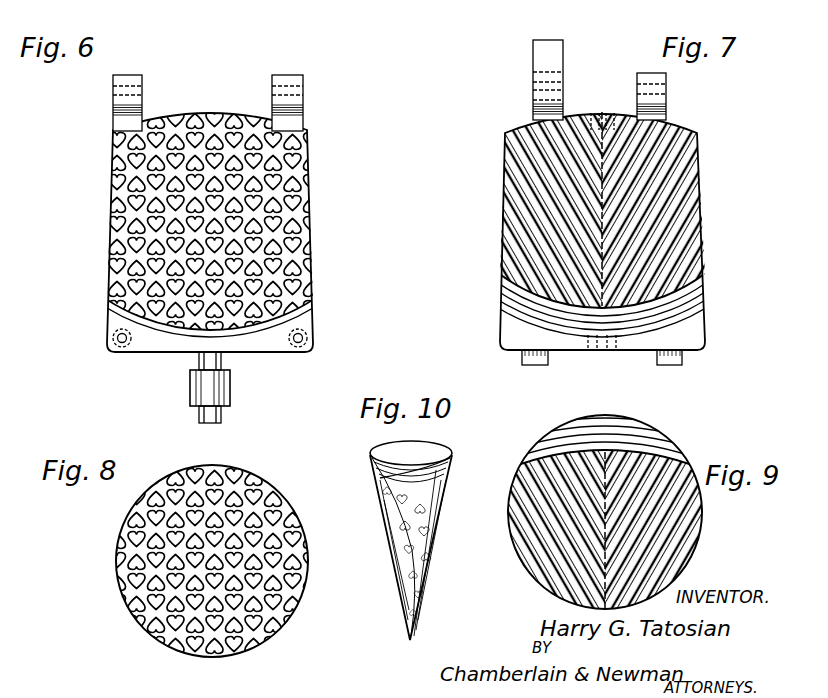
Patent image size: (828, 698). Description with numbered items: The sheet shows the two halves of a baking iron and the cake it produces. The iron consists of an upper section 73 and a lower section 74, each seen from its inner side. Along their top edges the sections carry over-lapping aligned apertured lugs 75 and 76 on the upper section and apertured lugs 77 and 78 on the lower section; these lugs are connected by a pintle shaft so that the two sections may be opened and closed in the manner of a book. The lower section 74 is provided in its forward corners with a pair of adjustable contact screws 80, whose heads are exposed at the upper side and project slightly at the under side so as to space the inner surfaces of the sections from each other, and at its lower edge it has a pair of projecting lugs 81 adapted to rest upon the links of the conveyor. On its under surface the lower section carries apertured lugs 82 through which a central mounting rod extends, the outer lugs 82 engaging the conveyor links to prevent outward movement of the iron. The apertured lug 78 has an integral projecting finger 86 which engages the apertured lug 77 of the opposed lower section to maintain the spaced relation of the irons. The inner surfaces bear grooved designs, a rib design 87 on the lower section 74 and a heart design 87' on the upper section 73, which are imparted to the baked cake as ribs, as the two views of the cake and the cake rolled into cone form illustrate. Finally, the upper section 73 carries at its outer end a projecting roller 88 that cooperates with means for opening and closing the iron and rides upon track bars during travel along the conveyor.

In FIG. 6, the upper section 73 is at (313, 178).
In FIG. 7, the lower section 74 is at (500, 238).
In FIG. 6, the apertured lug 75 is at (142, 90).
In FIG. 6, the apertured lug 76 is at (303, 90).
In FIG. 7, the apertured lug 77 is at (660, 90).
In FIG. 7, the apertured lug 78 is at (541, 92).
In FIG. 6, the adjustable contact screws 80 is at (120, 346).
In FIG. 7, the projecting lugs 81 is at (537, 366).
In FIG. 7, the apertured lugs 82 is at (603, 110).
In FIG. 7, the projecting finger 86 is at (555, 53).
In FIG. 7, the grooved design 87 is at (617, 205).
In FIG. 6, the grooved design 87' is at (232, 221).
In FIG. 6, the projecting rollers 88 is at (230, 390).